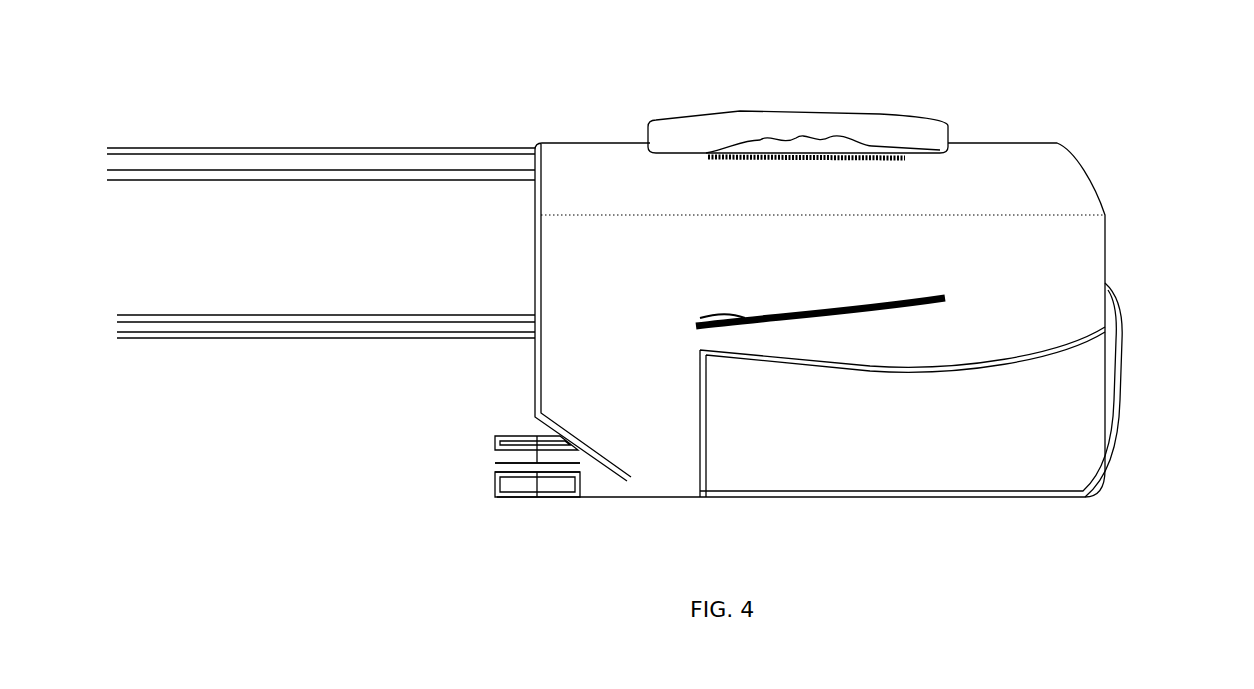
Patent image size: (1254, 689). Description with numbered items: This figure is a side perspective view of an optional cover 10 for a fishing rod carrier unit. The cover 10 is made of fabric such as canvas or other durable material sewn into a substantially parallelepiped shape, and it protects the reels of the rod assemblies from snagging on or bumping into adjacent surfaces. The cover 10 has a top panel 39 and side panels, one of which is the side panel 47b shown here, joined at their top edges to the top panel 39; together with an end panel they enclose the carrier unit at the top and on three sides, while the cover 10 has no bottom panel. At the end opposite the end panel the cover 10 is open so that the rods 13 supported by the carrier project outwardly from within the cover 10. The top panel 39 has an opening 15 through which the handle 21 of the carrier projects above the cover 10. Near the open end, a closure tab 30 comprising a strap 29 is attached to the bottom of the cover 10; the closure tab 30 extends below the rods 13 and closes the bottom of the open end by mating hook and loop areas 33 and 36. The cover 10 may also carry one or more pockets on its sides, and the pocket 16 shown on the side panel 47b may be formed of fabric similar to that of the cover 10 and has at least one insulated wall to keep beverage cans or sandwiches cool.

The cover 10 is at (829, 303).
The rods 13 is at (248, 172).
The opening 15 is at (826, 152).
The pocket 16 is at (1117, 378).
The handle 21 is at (854, 86).
The strap 29 is at (581, 470).
The closure tab 30 is at (486, 528).
The hook and loop area 33 is at (495, 457).
The hook and loop area 36 is at (497, 495).
The top panel 39 is at (1010, 155).
The side panel 47b is at (587, 253).